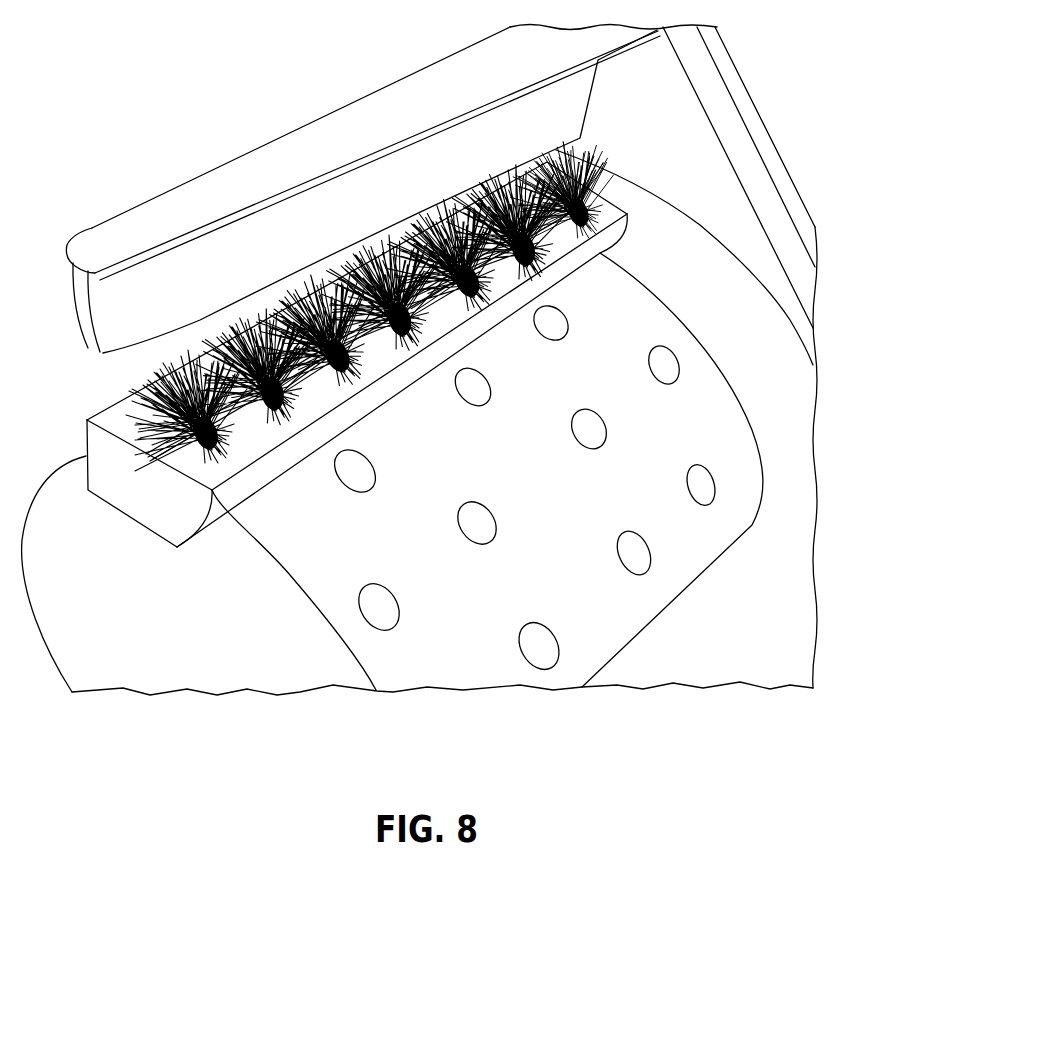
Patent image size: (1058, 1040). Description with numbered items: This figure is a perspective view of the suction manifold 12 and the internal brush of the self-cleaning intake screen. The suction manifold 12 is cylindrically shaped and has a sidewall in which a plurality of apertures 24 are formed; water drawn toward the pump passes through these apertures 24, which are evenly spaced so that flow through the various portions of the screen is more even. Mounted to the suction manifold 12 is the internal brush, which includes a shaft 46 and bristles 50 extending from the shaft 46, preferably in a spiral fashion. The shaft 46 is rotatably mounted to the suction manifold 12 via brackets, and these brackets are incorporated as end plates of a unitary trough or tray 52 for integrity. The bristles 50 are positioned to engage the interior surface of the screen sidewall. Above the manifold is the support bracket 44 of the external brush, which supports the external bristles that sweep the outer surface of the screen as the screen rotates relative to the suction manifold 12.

The suction manifold 12 is at (240, 615).
The apertures 24 is at (588, 448).
The support bracket 44 is at (400, 207).
The shaft 46 is at (82, 457).
The bristles 50 is at (170, 374).
The trough or tray 52 is at (168, 506).